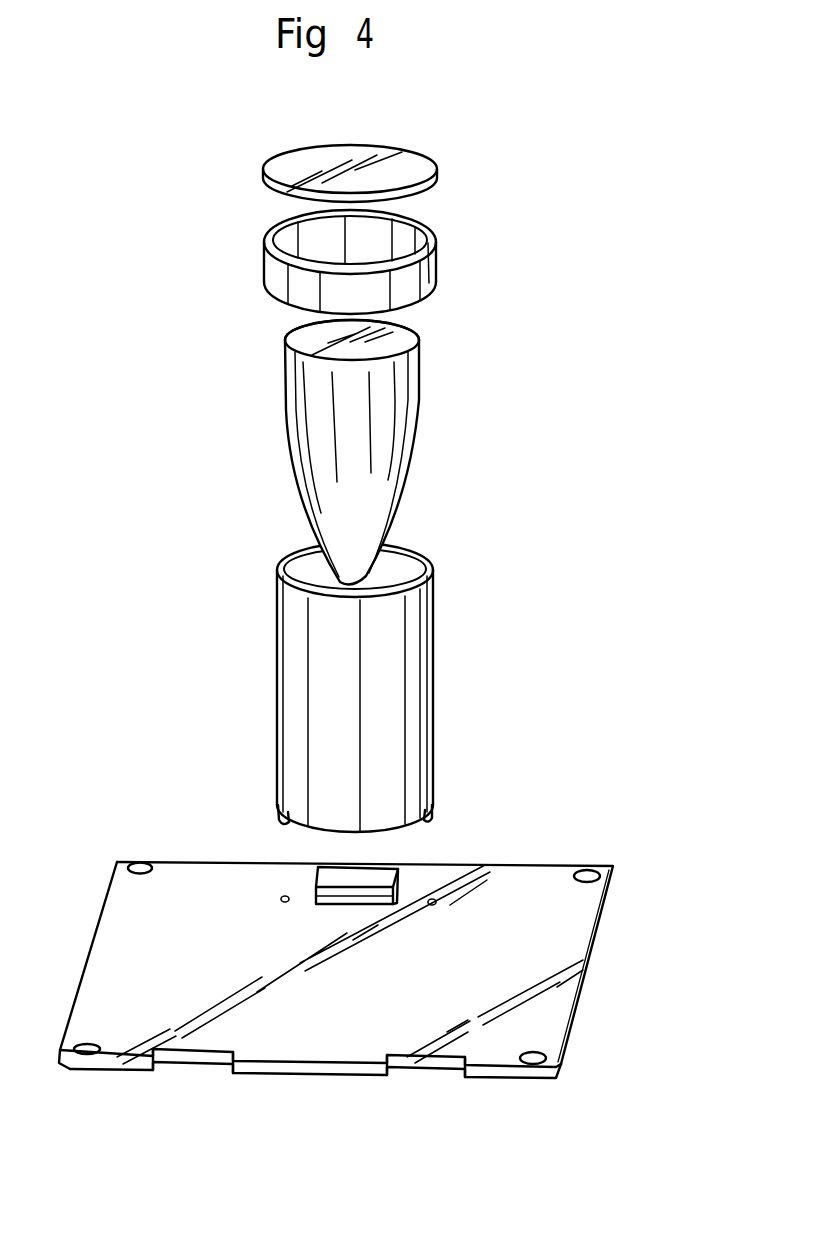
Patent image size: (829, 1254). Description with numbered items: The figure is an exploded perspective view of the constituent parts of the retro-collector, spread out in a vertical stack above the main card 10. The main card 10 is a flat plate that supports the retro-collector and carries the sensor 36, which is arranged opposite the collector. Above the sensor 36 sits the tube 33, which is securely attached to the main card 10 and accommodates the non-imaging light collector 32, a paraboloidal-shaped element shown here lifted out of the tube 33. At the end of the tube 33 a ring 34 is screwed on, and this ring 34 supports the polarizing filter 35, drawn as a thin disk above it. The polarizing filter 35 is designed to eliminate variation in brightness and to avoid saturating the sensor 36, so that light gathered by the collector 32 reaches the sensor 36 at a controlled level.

The main card 10 is at (580, 928).
The non-imaging light collector 32 is at (403, 440).
The tube 33 is at (403, 700).
The ring 34 is at (422, 267).
The polarizing filter 35 is at (417, 162).
The sensor 36 is at (381, 867).